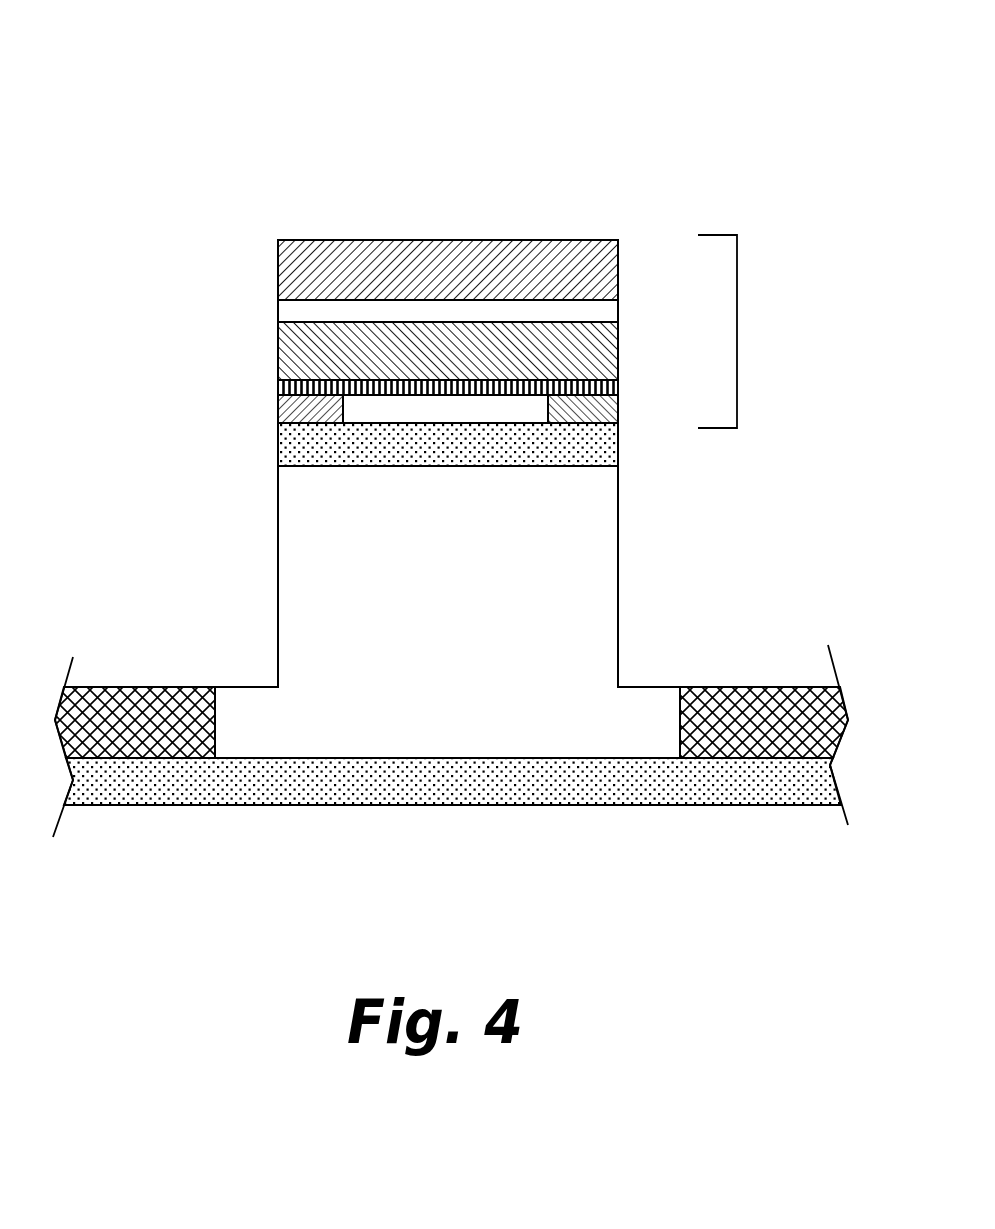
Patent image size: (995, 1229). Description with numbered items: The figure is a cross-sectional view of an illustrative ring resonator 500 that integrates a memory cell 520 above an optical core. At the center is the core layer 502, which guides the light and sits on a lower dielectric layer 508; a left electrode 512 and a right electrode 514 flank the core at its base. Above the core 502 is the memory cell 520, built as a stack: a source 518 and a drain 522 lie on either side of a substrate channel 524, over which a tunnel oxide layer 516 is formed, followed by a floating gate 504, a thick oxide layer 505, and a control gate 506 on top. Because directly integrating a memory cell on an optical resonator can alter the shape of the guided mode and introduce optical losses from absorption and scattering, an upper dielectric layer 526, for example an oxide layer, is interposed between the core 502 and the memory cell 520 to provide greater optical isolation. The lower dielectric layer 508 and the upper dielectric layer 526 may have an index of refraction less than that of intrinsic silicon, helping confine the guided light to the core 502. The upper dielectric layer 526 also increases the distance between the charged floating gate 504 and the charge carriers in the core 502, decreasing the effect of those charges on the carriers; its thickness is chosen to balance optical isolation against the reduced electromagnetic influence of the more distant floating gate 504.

The ring resonator 500 is at (204, 118).
The core layer 502 is at (472, 616).
The floating gate 504 is at (469, 366).
The thick oxide layer 505 is at (278, 311).
The control gate 506 is at (474, 281).
The lower dielectric layer 508 is at (466, 792).
The left electrode 512 is at (158, 739).
The right electrode 514 is at (787, 739).
The tunnel oxide layer 516 is at (278, 386).
The source 518 is at (278, 413).
The memory cell 520 is at (737, 302).
The drain 522 is at (620, 410).
The substrate channel 524 is at (473, 421).
The upper dielectric layer 526 is at (473, 457).